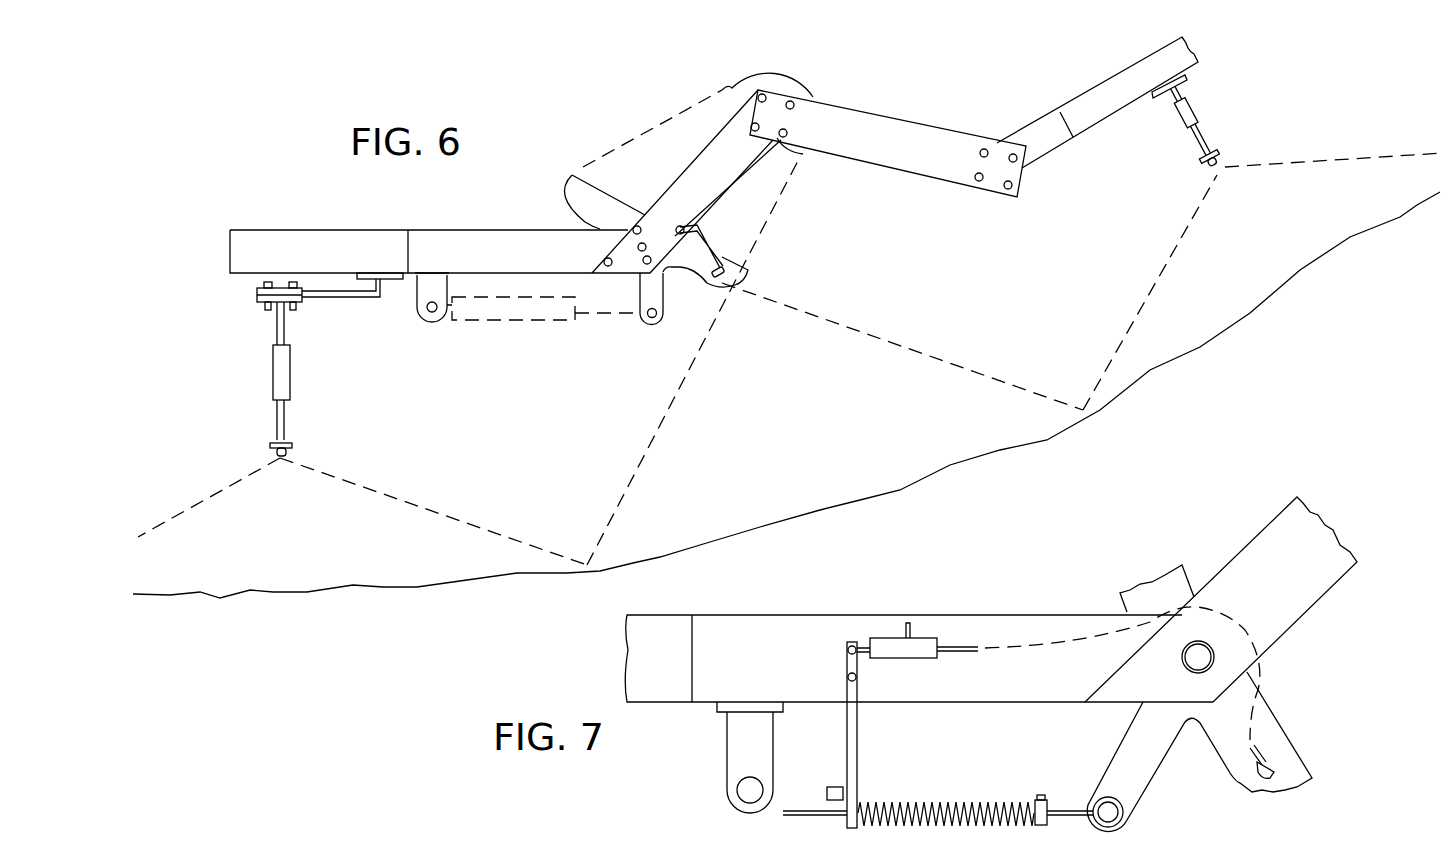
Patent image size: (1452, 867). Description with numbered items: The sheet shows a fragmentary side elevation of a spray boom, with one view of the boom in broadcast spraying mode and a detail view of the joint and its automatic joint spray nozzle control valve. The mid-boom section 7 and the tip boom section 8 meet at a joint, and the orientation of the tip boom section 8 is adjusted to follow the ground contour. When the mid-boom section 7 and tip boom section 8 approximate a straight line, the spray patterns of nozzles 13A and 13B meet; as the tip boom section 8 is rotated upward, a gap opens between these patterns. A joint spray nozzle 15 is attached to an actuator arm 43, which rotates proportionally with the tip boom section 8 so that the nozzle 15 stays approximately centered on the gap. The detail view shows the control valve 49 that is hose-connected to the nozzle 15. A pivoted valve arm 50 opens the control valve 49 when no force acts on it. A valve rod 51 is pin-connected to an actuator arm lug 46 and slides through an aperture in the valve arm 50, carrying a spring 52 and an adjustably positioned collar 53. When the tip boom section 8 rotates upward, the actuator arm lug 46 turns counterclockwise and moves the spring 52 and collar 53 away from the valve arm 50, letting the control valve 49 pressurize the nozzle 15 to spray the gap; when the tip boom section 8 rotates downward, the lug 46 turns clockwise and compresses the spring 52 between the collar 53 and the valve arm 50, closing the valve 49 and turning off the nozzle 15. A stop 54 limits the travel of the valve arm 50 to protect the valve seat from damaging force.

In FIG. 6, the mid-boom section 7 is at (307, 230).
In FIG. 6, the tip boom section 8 is at (1108, 80).
In FIG. 6, the actuator arm 43 is at (562, 190).
In FIG. 6, the spray nozzle 15 is at (730, 273).
In FIG. 7, the spray nozzle 15 is at (1278, 767).
In FIG. 6, the spray nozzle 13A is at (292, 446).
In FIG. 6, the spray nozzle 13B is at (1226, 163).
In FIG. 7, the actuator arm lug 46 is at (1143, 800).
In FIG. 7, the control valve 49 is at (925, 637).
In FIG. 7, the valve arm 50 is at (857, 742).
In FIG. 7, the valve rod 51 is at (786, 817).
In FIG. 7, the spring 52 is at (927, 810).
In FIG. 7, the collar 53 is at (1041, 795).
In FIG. 7, the stop 54 is at (830, 787).